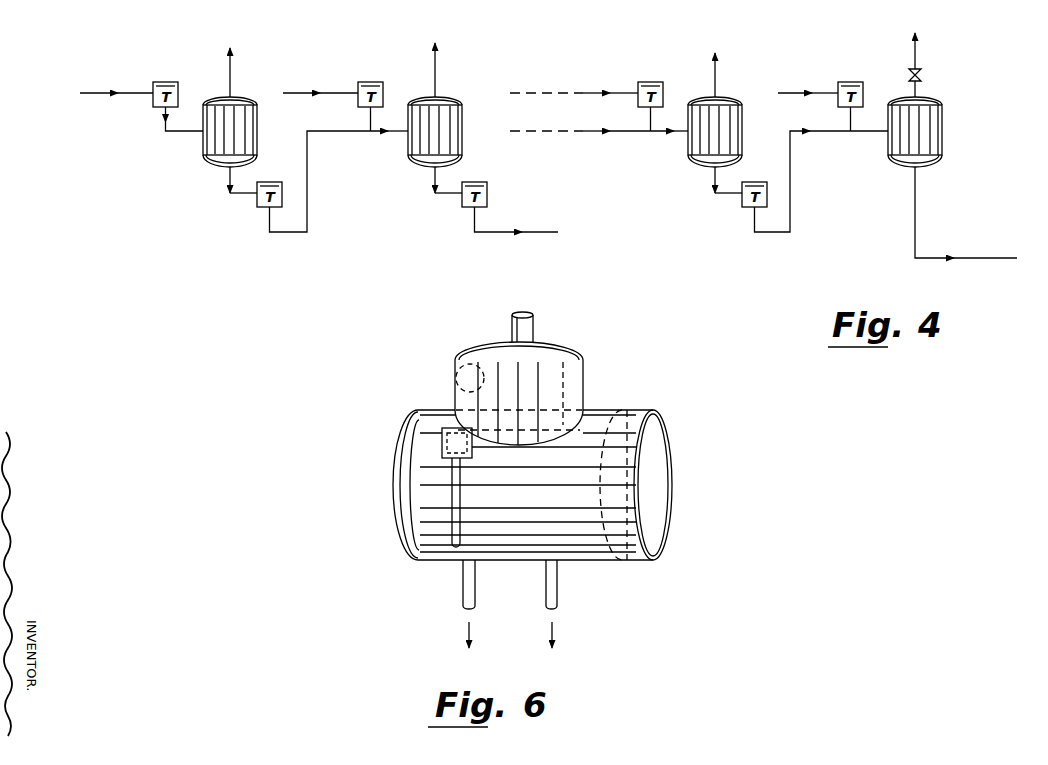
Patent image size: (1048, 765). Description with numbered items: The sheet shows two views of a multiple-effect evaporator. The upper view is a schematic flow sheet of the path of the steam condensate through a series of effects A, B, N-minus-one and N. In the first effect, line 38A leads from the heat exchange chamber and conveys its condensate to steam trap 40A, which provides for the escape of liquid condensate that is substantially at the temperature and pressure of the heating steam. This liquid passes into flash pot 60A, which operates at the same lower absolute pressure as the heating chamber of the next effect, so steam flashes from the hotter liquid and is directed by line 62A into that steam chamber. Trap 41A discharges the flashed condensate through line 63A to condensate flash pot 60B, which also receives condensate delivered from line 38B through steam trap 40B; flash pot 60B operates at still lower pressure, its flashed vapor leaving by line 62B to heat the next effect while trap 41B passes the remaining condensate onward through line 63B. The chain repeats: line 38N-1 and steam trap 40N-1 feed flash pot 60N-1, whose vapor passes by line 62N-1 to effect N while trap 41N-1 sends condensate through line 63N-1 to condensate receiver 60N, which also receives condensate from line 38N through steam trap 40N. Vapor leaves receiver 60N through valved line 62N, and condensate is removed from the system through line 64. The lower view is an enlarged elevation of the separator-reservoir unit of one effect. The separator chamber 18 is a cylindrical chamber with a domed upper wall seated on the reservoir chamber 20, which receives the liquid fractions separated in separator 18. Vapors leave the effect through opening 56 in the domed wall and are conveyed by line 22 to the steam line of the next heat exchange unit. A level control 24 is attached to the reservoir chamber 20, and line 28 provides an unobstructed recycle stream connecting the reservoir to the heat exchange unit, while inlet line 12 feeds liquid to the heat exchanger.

In FIG. 4, the line 38A is at (93, 92).
In FIG. 4, the steam trap 40A is at (167, 82).
In FIG. 4, the flash pot 60A is at (258, 122).
In FIG. 4, the line 62A is at (232, 74).
In FIG. 4, the trap 41A is at (289, 172).
In FIG. 4, the line 63A is at (275, 233).
In FIG. 4, the line 38B is at (338, 92).
In FIG. 4, the steam trap 40B is at (390, 73).
In FIG. 4, the flash pot 60B is at (463, 122).
In FIG. 4, the line 62B is at (437, 70).
In FIG. 4, the trap 41B is at (480, 184).
In FIG. 4, the line 63B is at (505, 233).
In FIG. 4, the line 38N-1 is at (591, 92).
In FIG. 4, the steam trap 40N-1 is at (680, 56).
In FIG. 4, the flash pot 60N-1 is at (743, 122).
In FIG. 4, the line 62N-1 is at (717, 78).
In FIG. 4, the trap 41N-1 is at (742, 206).
In FIG. 4, the line 63N-1 is at (768, 233).
In FIG. 4, the line 38N is at (791, 92).
In FIG. 4, the steam trap 40N is at (858, 82).
In FIG. 4, the condensate receiver 60N is at (943, 127).
In FIG. 4, the line 62N is at (917, 58).
In FIG. 4, the line 64 is at (976, 260).
In FIG. 6, the line 22 is at (534, 333).
In FIG. 6, the opening 56 is at (526, 350).
In FIG. 6, the separator chamber 18 is at (583, 386).
In FIG. 6, the reservoir chamber 20 is at (585, 410).
In FIG. 6, the level control 24 is at (462, 492).
In FIG. 6, the line 28 is at (462, 587).
In FIG. 6, the inlet line 12 is at (558, 588).